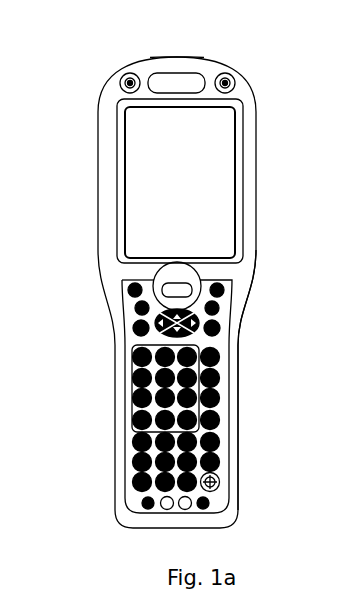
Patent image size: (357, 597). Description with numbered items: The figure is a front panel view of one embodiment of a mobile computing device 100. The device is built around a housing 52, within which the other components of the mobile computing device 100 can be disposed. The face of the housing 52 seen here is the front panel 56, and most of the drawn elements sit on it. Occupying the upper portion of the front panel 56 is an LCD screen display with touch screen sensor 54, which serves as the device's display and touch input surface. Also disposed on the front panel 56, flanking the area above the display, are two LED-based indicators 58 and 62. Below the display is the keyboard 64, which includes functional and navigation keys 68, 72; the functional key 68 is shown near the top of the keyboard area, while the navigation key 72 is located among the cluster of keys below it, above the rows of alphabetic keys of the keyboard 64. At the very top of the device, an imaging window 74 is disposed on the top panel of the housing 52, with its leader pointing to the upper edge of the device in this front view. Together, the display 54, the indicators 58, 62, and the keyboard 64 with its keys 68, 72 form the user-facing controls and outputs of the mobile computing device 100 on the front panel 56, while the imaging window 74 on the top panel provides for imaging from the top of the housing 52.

The mobile computing device 100 is at (259, 42).
The housing 52 is at (247, 263).
The LCD screen display with touch screen sensor 54 is at (166, 183).
The front panel 56 is at (105, 128).
The LED-based indicator 58 is at (121, 80).
The LED-based indicator 62 is at (235, 80).
The keyboard 64 is at (127, 380).
The functional key 68 is at (153, 280).
The navigation key 72 is at (122, 320).
The imaging window 74 is at (173, 58).